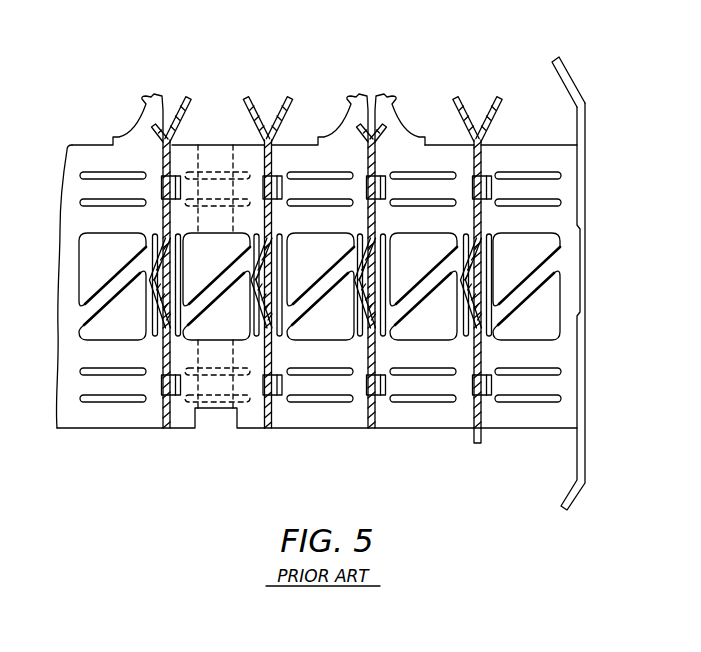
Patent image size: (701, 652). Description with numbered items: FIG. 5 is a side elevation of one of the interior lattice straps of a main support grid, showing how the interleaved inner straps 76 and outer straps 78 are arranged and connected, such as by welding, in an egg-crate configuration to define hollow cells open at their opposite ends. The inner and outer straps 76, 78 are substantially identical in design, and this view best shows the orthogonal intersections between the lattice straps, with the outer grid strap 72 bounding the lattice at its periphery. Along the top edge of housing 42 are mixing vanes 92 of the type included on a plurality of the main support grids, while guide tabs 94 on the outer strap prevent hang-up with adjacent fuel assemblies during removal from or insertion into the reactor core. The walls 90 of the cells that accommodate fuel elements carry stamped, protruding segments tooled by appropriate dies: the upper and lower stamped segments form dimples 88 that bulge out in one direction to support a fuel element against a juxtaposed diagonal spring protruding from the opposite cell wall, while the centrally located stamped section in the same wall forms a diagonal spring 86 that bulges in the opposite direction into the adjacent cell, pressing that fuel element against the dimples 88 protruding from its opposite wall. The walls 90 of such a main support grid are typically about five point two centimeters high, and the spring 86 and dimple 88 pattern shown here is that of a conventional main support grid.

The walls 90 is at (84, 218).
The top edge of housing 42 is at (296, 150).
The mixing vanes 92 is at (394, 128).
The dimples 88 is at (528, 192).
The spring 86 is at (458, 287).
The outer straps 78 is at (477, 440).
The inner straps 76 is at (522, 420).
The outer grid strap 72 is at (585, 412).
The guide tabs 94 is at (570, 86).